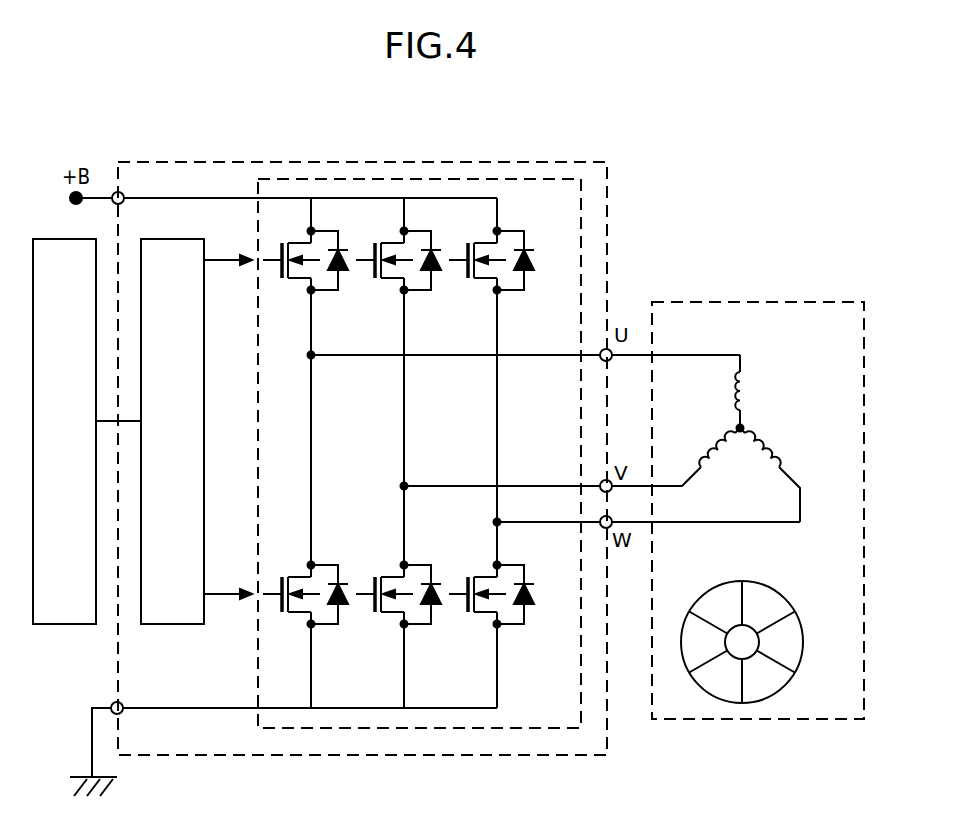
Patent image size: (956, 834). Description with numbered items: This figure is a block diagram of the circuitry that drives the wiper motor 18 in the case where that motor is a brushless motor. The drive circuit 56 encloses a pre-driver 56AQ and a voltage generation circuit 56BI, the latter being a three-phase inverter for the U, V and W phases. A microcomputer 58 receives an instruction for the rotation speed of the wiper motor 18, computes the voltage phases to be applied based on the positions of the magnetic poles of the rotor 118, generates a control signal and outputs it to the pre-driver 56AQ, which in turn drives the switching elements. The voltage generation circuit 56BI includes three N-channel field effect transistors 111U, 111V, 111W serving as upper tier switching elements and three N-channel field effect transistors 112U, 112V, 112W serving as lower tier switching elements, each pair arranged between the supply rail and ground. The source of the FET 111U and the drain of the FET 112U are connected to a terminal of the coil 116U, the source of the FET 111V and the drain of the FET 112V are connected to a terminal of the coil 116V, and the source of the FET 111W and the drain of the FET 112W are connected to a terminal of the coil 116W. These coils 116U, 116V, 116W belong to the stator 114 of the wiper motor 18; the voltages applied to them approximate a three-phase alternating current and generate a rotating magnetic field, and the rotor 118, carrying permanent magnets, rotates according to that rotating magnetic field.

The motor drive circuit 56 is at (213, 161).
The voltage generation circuit 56BI is at (382, 179).
The pre-driver 56AQ is at (177, 626).
The microcomputer 58 is at (69, 626).
The U-phase upper tier FET 111U is at (330, 300).
The V-phase upper tier FET 111V is at (423, 300).
The W-phase upper tier FET 111W is at (548, 320).
The U-phase lower tier FET 112U is at (330, 636).
The V-phase lower tier FET 112V is at (423, 636).
The W-phase lower tier FET 112W is at (516, 636).
The wiper motor 18 is at (773, 302).
The stator 114 is at (769, 415).
The U-phase coil 116U is at (748, 382).
The V-phase coil 116V is at (715, 468).
The W-phase coil 116W is at (784, 442).
The rotor 118 is at (785, 593).